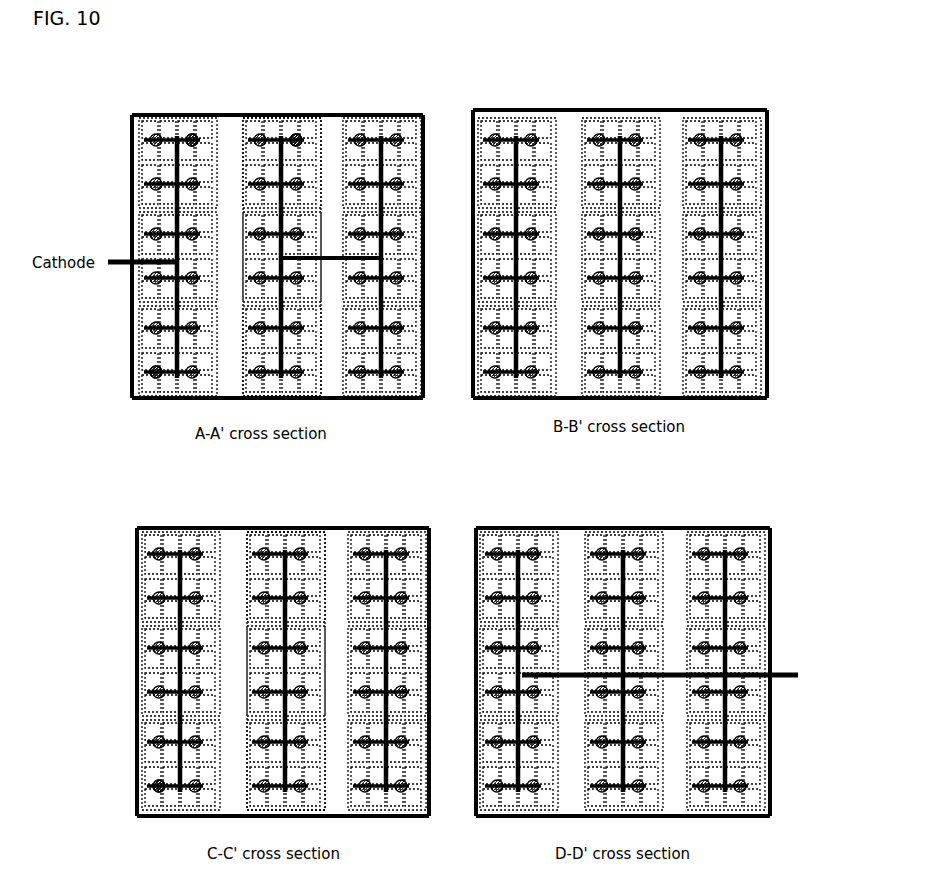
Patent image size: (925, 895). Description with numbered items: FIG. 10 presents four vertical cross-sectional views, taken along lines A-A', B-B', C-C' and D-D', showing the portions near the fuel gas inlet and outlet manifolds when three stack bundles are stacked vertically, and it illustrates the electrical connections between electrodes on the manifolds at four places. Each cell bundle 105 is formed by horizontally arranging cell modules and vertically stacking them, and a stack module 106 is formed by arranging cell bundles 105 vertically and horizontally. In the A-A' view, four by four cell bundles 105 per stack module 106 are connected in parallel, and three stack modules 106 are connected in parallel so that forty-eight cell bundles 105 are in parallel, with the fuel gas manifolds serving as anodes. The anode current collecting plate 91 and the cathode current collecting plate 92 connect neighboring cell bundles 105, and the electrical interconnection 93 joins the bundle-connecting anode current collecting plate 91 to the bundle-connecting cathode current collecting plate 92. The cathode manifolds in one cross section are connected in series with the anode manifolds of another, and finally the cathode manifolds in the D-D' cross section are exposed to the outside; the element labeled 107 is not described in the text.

The anode current collecting plate for connection between cell bundles 91 is at (198, 132).
The cathode current collecting plate for connection between cell bundles 92 is at (300, 130).
The electrical interconnection between a cell bundle-connecting anode current collec 93 is at (330, 250).
The cell bundle 105 is at (146, 563).
The stack module 106 is at (329, 595).
The third region 107 is at (717, 524).